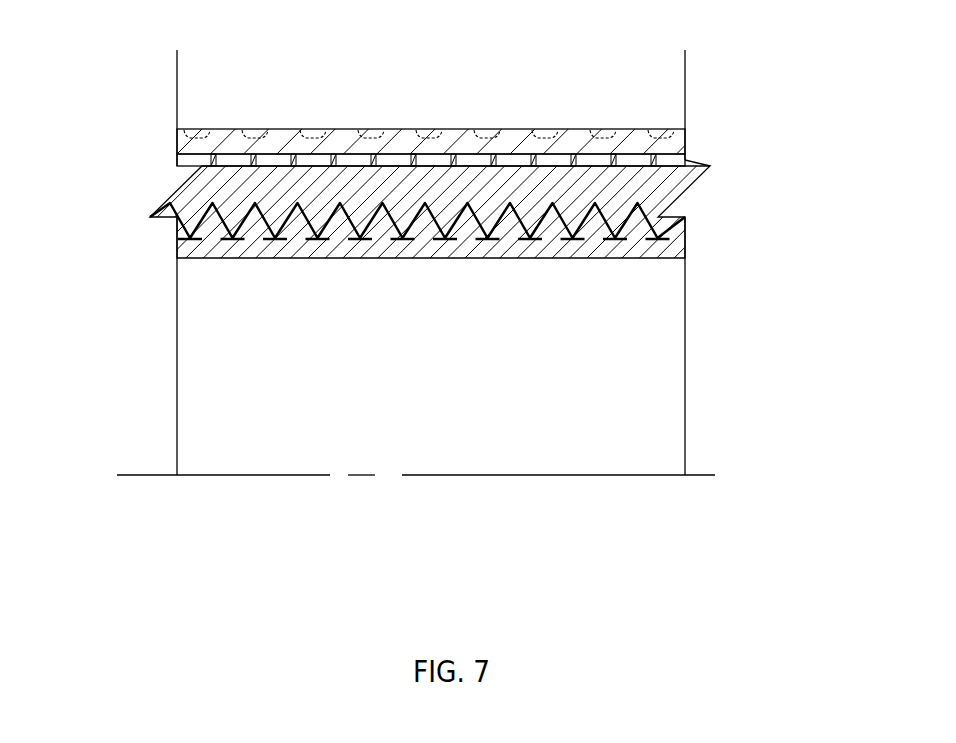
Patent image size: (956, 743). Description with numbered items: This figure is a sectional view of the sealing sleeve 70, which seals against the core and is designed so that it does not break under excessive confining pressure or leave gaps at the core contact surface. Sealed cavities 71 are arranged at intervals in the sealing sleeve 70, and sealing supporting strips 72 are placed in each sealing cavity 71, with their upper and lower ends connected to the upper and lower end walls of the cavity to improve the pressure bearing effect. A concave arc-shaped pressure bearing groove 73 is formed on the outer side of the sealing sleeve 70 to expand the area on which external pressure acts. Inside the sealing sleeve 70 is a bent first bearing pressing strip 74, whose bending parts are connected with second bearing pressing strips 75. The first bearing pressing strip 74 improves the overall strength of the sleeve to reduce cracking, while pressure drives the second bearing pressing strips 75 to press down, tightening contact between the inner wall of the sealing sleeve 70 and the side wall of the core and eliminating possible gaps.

The sealing sleeve 70 is at (587, 145).
The sealing cavities 71 is at (443, 140).
The sealing supporting strips 72 is at (327, 148).
The pressure bearing groove 73 is at (200, 130).
The first bearing pressing strip 74 is at (655, 202).
The second bearing pressing strips 75 is at (640, 240).